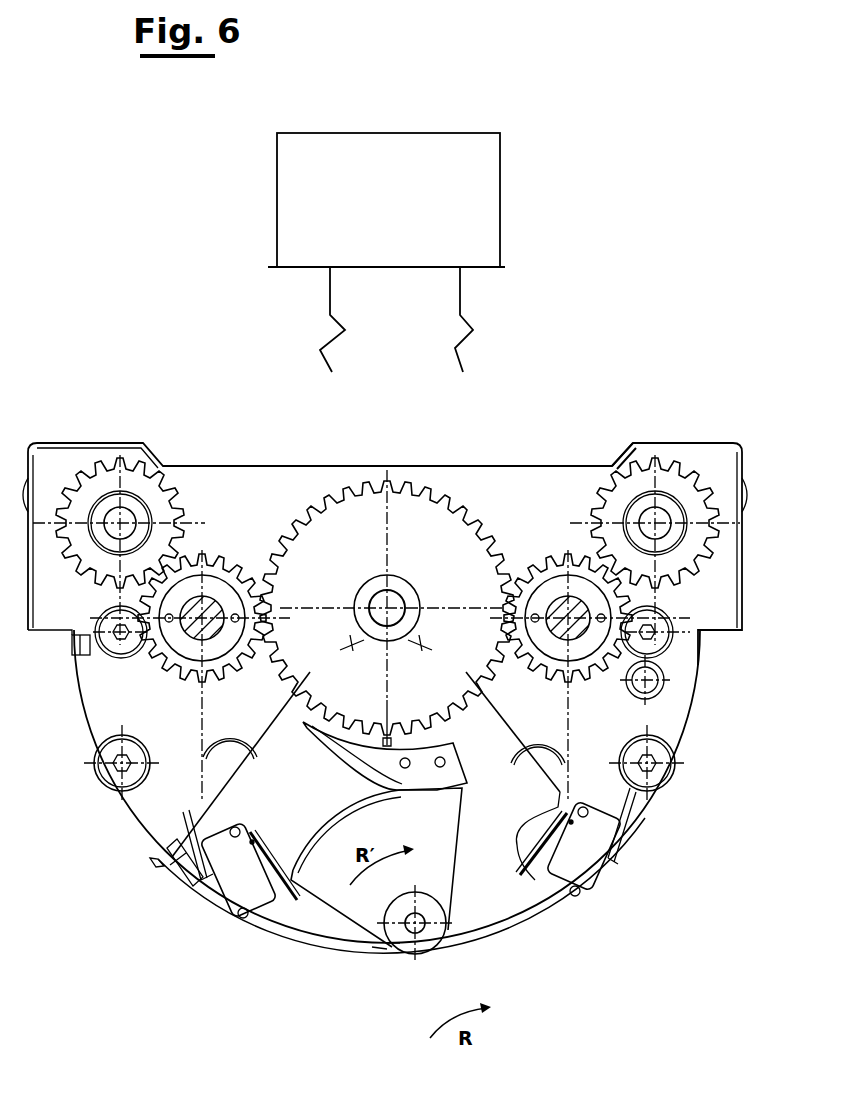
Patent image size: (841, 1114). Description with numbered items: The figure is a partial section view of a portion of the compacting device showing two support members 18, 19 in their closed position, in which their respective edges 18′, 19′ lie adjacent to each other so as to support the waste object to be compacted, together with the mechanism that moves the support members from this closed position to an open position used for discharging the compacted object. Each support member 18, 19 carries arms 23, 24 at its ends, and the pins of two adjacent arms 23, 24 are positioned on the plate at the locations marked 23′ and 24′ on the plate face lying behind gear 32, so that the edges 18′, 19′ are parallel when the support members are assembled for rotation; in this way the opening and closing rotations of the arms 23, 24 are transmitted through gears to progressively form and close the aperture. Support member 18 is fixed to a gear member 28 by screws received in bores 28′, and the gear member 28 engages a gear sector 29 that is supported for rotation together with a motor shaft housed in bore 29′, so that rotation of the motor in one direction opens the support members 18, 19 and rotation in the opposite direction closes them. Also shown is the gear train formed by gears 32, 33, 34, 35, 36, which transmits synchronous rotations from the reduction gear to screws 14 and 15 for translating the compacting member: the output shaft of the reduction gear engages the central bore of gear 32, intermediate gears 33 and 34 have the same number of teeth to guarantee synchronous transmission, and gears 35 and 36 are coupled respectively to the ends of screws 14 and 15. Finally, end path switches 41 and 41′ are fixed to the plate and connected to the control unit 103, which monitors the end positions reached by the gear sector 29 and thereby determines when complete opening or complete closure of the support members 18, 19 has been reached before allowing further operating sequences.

The control unit 103 is at (488, 193).
The screw 14 is at (130, 517).
The screw 15 is at (668, 513).
The support member 18 is at (548, 925).
The edge of support member 18′ is at (390, 948).
The support member 19 is at (273, 943).
The edge of support member 19′ is at (383, 947).
The arm 23 is at (273, 740).
The pin position of arm 23′ is at (352, 642).
The arm 24 is at (493, 738).
The pin position of arm 24′ is at (421, 642).
The gear member 28 is at (328, 765).
The bores 28′ is at (413, 767).
The gear sector 29 is at (443, 852).
The bore 29′ is at (427, 930).
The gear 32 is at (395, 523).
The intermediate gear 33 is at (555, 565).
The intermediate gear 34 is at (215, 562).
The gear 35 is at (103, 480).
The gear 36 is at (622, 452).
The end path switch 41 is at (590, 865).
The end path switch 41′ is at (230, 885).